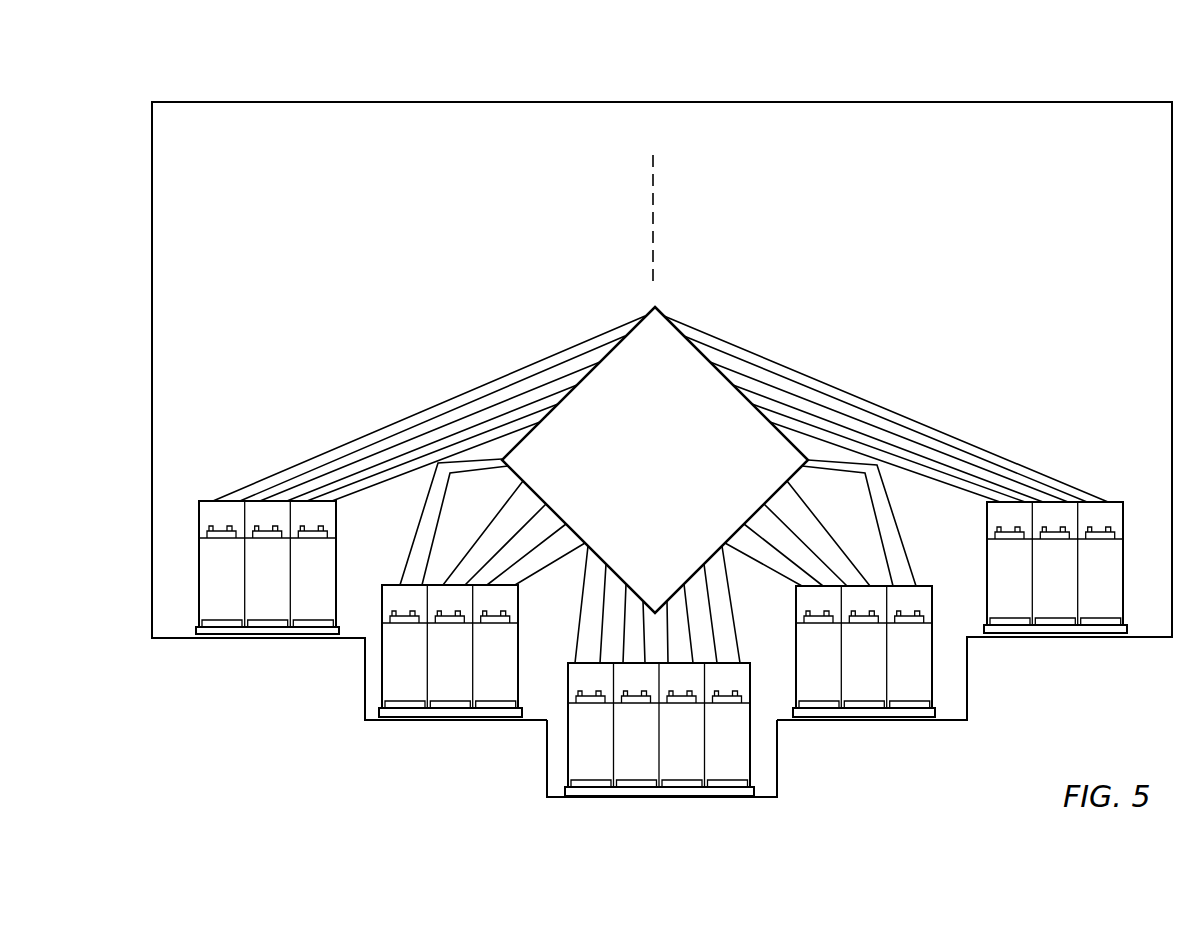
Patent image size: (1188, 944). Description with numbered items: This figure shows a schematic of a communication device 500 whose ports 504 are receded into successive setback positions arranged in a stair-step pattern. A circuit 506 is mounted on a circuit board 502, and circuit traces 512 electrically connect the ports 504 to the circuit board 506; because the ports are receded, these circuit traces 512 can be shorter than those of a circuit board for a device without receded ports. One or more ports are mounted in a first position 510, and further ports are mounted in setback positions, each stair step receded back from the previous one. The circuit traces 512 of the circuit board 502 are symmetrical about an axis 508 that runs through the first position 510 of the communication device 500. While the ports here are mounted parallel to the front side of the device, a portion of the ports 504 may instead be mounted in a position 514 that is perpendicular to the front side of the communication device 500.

The communication device 500 is at (235, 86).
The circuit board 502 is at (1149, 135).
The ports 504 is at (208, 500).
The circuit 506 is at (673, 462).
The axis 508 is at (662, 241).
The first position 510 is at (658, 803).
The circuit traces 512 is at (340, 438).
The position 514 is at (540, 770).